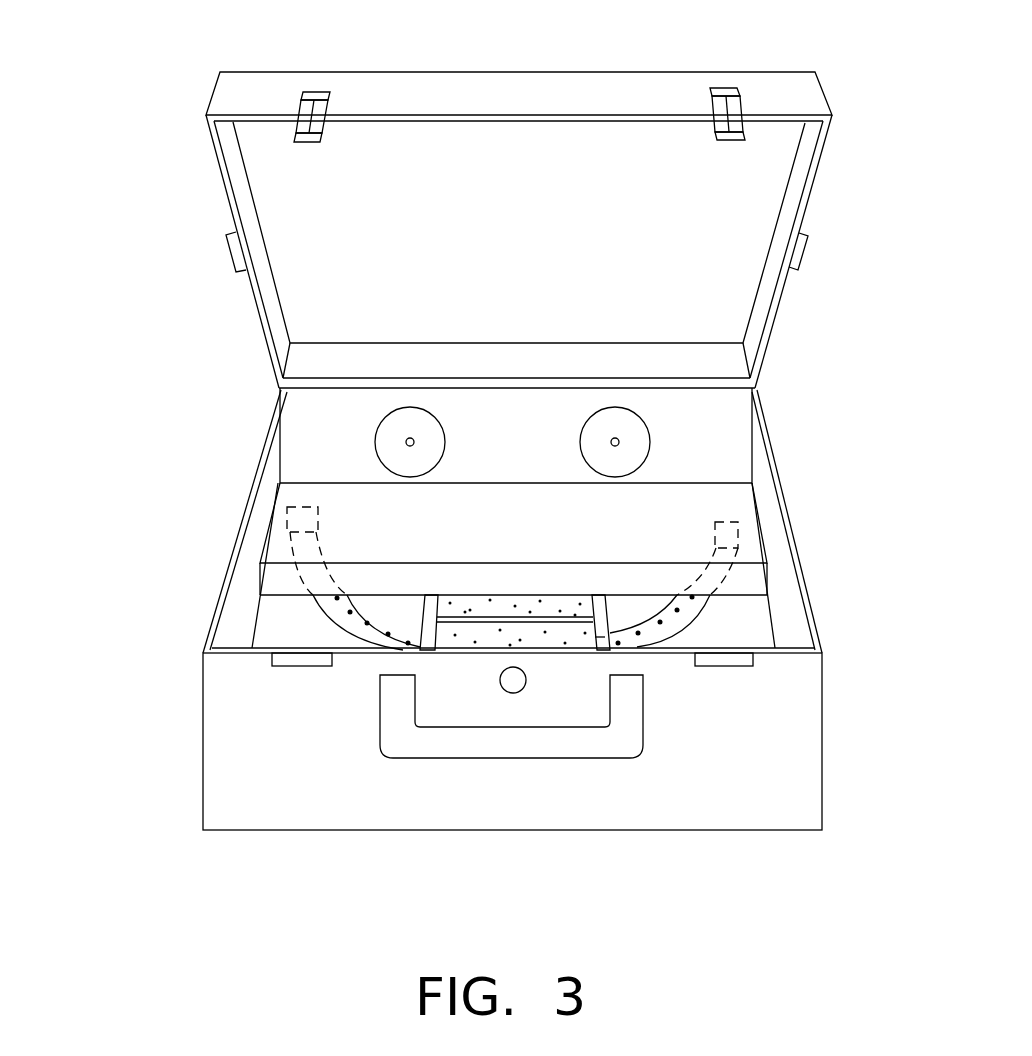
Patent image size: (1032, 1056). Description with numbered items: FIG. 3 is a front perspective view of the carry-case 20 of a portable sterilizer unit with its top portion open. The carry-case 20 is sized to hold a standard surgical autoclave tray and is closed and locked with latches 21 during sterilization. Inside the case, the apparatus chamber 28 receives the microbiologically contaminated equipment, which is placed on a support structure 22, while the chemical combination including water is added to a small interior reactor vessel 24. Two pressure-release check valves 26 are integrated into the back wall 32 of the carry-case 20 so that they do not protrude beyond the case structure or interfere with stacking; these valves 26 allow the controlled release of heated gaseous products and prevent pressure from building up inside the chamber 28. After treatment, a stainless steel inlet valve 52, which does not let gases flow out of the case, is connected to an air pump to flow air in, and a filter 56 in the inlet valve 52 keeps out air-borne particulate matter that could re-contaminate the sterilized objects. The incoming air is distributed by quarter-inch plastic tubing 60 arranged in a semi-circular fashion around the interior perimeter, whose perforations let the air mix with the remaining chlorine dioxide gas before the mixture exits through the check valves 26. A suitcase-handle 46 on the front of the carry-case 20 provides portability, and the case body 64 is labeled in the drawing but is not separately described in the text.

The carrying case 20 is at (458, 459).
The latch 21 is at (307, 108).
The latch catch 22 is at (740, 630).
The floor of case 24 is at (600, 637).
The spool 26 is at (388, 438).
The tray 28 is at (546, 491).
The lid 32 is at (330, 405).
The compartment 46 is at (630, 722).
The handle 52 is at (530, 690).
The lock 56 is at (518, 684).
The strap 60 is at (338, 613).
The case body 64 is at (520, 462).